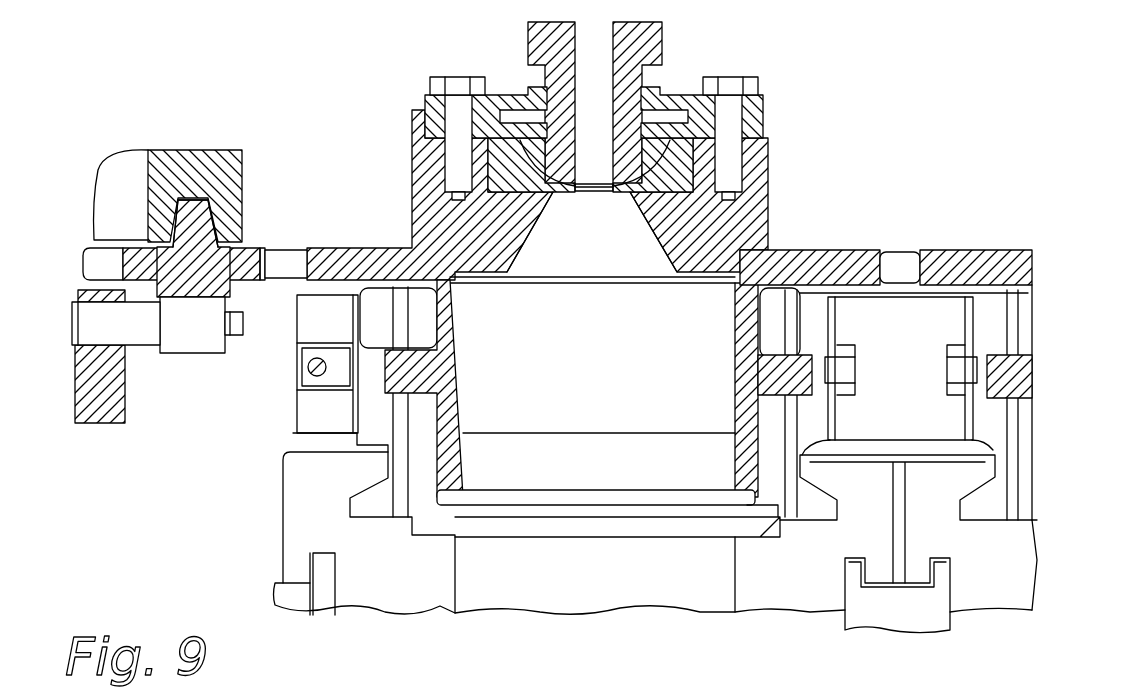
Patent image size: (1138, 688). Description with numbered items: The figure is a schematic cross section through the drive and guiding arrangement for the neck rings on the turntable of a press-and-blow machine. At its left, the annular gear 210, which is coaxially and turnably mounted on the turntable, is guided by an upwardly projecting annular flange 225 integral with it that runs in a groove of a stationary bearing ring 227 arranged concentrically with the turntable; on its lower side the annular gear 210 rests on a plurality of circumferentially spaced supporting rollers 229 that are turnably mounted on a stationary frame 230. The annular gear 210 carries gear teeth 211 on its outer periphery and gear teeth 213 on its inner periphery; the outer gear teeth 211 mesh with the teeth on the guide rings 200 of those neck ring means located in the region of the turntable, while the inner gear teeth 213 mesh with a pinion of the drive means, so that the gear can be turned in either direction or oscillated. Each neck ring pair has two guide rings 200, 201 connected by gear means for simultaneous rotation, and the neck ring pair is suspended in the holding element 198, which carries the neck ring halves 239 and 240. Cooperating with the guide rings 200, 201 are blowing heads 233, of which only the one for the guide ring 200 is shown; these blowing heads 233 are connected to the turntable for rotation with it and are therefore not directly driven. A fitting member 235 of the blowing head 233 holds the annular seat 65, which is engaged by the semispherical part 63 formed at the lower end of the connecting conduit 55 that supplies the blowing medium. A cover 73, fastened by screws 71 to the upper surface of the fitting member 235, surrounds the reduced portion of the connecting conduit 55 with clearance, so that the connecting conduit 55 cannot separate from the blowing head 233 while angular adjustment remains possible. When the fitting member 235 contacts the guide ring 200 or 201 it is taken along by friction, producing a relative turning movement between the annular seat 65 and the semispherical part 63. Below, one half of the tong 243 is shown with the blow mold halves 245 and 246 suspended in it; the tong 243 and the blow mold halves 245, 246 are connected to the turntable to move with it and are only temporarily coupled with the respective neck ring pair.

The connecting conduit 55 is at (665, 50).
The semispherical part 63 is at (638, 165).
The annular seat 65 is at (538, 190).
The screws 71 is at (455, 77).
The cover 73 is at (670, 95).
The holding element 198 is at (295, 418).
The guide ring 200 is at (796, 248).
The guide ring 201 is at (1014, 250).
The annular gear 210 is at (225, 255).
The gear teeth 211 is at (275, 255).
The gear teeth 213 is at (88, 258).
The annular flange 225 is at (205, 208).
The bearing ring 227 is at (190, 150).
The supporting rollers 229 is at (190, 353).
The stationary frame 230 is at (100, 425).
The blowing head 233 is at (652, 252).
The fitting member 235 is at (523, 255).
The neck ring half 239 is at (425, 425).
The neck ring half 240 is at (992, 437).
The tong half 243 is at (285, 596).
The blow mold half 245 is at (418, 615).
The blow mold half 246 is at (1030, 590).